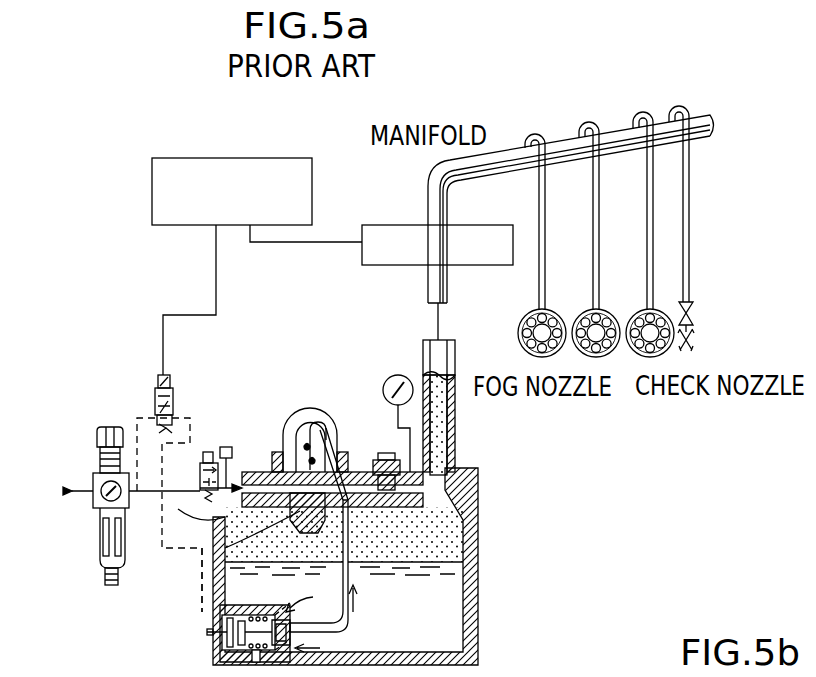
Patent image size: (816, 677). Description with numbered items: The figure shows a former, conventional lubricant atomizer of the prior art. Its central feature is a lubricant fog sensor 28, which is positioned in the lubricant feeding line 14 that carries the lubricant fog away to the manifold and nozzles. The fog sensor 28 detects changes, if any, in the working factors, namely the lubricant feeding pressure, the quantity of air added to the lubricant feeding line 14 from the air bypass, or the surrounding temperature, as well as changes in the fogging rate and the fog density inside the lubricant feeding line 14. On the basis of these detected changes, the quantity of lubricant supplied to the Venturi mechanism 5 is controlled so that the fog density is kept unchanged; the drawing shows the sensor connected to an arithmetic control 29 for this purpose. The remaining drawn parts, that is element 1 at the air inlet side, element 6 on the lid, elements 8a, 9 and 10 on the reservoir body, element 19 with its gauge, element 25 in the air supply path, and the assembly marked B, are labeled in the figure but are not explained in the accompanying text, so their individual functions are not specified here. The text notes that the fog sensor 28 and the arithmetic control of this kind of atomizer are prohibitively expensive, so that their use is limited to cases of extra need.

The air pressure regulator with filter 1 is at (93, 505).
The Venturi mechanism 5 is at (206, 560).
The atomizing dome 6 is at (295, 405).
The mist chamber of tank 8a is at (463, 517).
The tank wall 9 is at (478, 566).
The lubricant reservoir 10 is at (465, 613).
The lubricant feeding line 14 is at (495, 157).
The valve with pressure gauge 19 is at (382, 462).
The solenoid valve 25 is at (258, 470).
The lubricant fog sensor 28 is at (397, 225).
The arithmetic control unit 29 is at (175, 158).
The fog generating assembly B is at (318, 382).